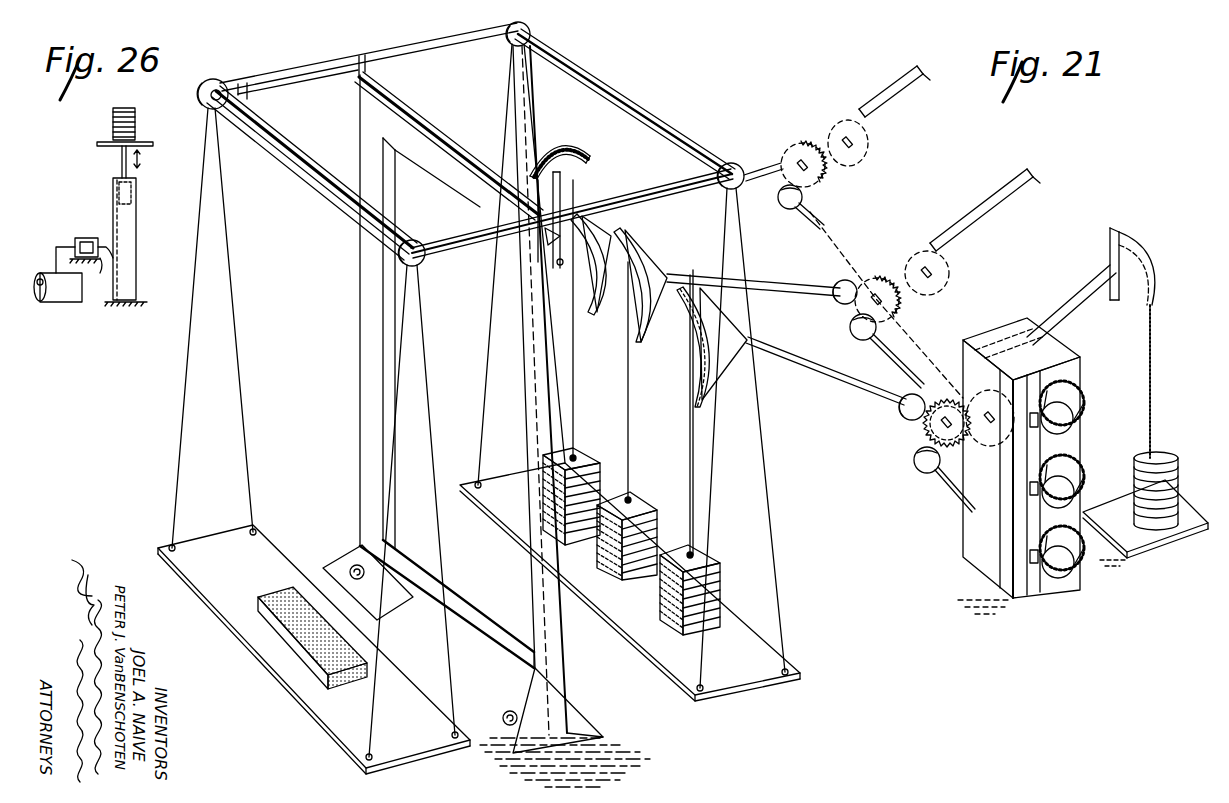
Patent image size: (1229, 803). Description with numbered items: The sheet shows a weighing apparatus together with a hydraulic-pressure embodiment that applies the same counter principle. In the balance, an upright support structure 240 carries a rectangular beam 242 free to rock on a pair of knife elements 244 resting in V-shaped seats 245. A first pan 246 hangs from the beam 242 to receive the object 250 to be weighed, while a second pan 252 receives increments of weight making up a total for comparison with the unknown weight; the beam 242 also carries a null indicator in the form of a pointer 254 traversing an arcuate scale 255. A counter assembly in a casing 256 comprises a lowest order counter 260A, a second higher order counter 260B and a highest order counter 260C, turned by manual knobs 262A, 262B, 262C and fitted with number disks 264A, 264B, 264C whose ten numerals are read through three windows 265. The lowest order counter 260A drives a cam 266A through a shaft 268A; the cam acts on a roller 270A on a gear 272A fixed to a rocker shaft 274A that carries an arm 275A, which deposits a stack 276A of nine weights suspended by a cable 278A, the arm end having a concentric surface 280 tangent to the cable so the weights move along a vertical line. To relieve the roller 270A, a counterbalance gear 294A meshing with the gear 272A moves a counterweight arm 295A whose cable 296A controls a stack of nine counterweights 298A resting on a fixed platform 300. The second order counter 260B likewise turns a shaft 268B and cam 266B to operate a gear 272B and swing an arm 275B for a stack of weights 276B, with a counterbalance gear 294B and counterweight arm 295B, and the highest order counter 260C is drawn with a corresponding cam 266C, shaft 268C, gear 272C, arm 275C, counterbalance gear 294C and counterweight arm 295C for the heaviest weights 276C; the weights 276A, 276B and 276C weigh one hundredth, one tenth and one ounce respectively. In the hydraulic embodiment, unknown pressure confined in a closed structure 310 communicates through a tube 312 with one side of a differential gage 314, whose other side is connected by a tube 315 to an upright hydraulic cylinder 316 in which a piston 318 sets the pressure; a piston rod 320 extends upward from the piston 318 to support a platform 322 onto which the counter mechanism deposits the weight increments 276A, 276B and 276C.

In FIG. 21, the upright support structure 240 is at (560, 702).
In FIG. 21, the rectangular beam 242 is at (355, 62).
In FIG. 21, the knife elements 244 is at (548, 235).
In FIG. 21, the V-shaped seats 245 is at (556, 266).
In FIG. 21, the first pan 246 is at (405, 760).
In FIG. 21, the object 250 is at (288, 598).
In FIG. 21, the second pan 252 is at (740, 670).
In FIG. 21, the pointer 254 is at (563, 195).
In FIG. 21, the arcuate scale 255 is at (573, 147).
In FIG. 21, the casing 256 is at (959, 536).
In FIG. 21, the lowest order counter 260A is at (1087, 570).
In FIG. 21, the second higher order counter 260B is at (1083, 463).
In FIG. 21, the highest order counter 260C is at (1077, 390).
In FIG. 21, the manual knob 262A is at (1060, 590).
In FIG. 21, the manual knob 262B is at (1080, 447).
In FIG. 21, the manual knob 262C is at (1077, 407).
In FIG. 21, the number disk 264A is at (1077, 500).
In FIG. 21, the number disk 264B is at (1083, 425).
In FIG. 21, the number disk 264C is at (1077, 373).
In FIG. 21, the windows 265 is at (1042, 390).
In FIG. 21, the cam 266A is at (913, 468).
In FIG. 21, the cam 266B is at (847, 333).
In FIG. 21, the crank knob 266C is at (777, 208).
In FIG. 21, the shaft 268A is at (948, 490).
In FIG. 21, the shaft 268B is at (880, 350).
In FIG. 21, the shaft 268C is at (815, 212).
In FIG. 21, the roller 270A is at (917, 445).
In FIG. 21, the gear 272A is at (917, 437).
In FIG. 21, the gear 272B is at (873, 277).
In FIG. 21, the gear 272C is at (803, 143).
In FIG. 21, the rocker shaft 274A is at (899, 412).
In FIG. 21, the arm 275A is at (848, 382).
In FIG. 21, the arm 275B is at (817, 257).
In FIG. 21, the rod 275C is at (770, 148).
In FIG. 21, the stack of weights 276A is at (725, 627).
In FIG. 26, the stack of weights 276A is at (142, 122).
In FIG. 21, the stack of weights 276B is at (660, 540).
In FIG. 21, the weights 276C is at (600, 483).
In FIG. 21, the cable 278A is at (693, 443).
In FIG. 21, the concentric surface 280 is at (683, 357).
In FIG. 21, the counterbalance gear 294A is at (1000, 440).
In FIG. 21, the gear 294B is at (917, 247).
In FIG. 21, the wheel 294C is at (870, 143).
In FIG. 21, the counterweight arm 295A is at (1047, 315).
In FIG. 21, the arm 295B is at (980, 227).
In FIG. 21, the arm 295C is at (890, 97).
In FIG. 21, the cable 296A is at (1152, 370).
In FIG. 21, the stack of counterweights 298A is at (1150, 447).
In FIG. 21, the fixed platform 300 is at (1133, 527).
In FIG. 26, the closed structure 310 is at (60, 296).
In FIG. 26, the tube 312 is at (60, 246).
In FIG. 26, the differential gage 314 is at (90, 237).
In FIG. 26, the tube 315 is at (101, 276).
In FIG. 26, the upright hydraulic cylinder 316 is at (137, 233).
In FIG. 26, the piston 318 is at (131, 203).
In FIG. 26, the piston rod 320 is at (121, 162).
In FIG. 26, the platform 322 is at (145, 146).